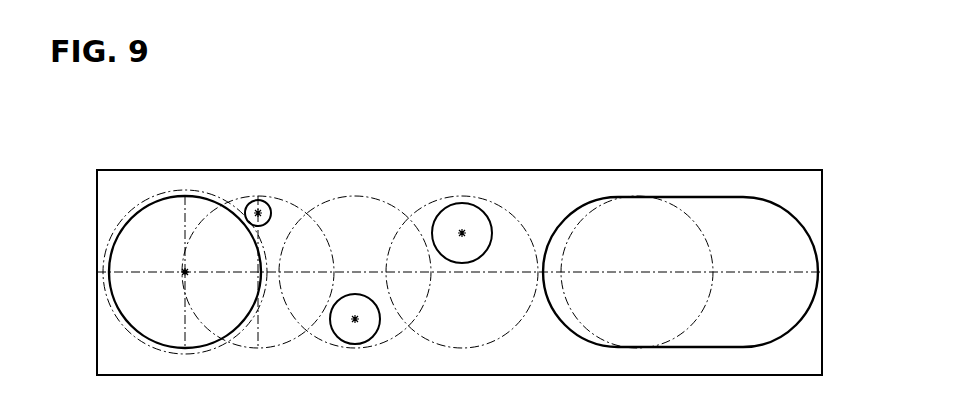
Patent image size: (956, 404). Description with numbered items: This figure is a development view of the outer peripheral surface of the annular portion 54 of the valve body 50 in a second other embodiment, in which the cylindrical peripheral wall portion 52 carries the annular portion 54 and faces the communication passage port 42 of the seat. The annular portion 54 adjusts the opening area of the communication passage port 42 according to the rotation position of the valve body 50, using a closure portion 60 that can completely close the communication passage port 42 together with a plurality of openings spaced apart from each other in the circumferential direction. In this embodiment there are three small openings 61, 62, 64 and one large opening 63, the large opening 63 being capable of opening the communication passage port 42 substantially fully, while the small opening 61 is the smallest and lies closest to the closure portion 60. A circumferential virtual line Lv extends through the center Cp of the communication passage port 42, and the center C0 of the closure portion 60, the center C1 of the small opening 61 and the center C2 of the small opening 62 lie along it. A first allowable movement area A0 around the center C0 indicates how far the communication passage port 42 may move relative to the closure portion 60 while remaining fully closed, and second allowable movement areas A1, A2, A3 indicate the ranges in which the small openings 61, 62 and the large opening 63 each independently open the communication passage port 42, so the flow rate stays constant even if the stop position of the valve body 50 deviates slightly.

The valve body 50 is at (130, 168).
The peripheral wall portion 52 is at (607, 170).
The annular portion 54 is at (830, 191).
The communication passage port 42 is at (107, 232).
The closure portion 60 is at (132, 260).
The small opening 61 is at (266, 204).
The small opening 62 is at (370, 298).
The large opening 63 is at (727, 203).
The small opening 64 is at (482, 226).
The first allowable movement area A0 is at (118, 200).
The second allowable movement area A1 is at (247, 204).
The second allowable movement area A2 is at (426, 200).
The second allowable movement area A3 is at (702, 196).
The center of the closure portion C0 is at (185, 270).
The center of the communication passage port Cp is at (177, 204).
The center of the small opening C1 is at (256, 210).
The center of the small opening C2 is at (355, 316).
The circumferential virtual line Lv is at (775, 272).